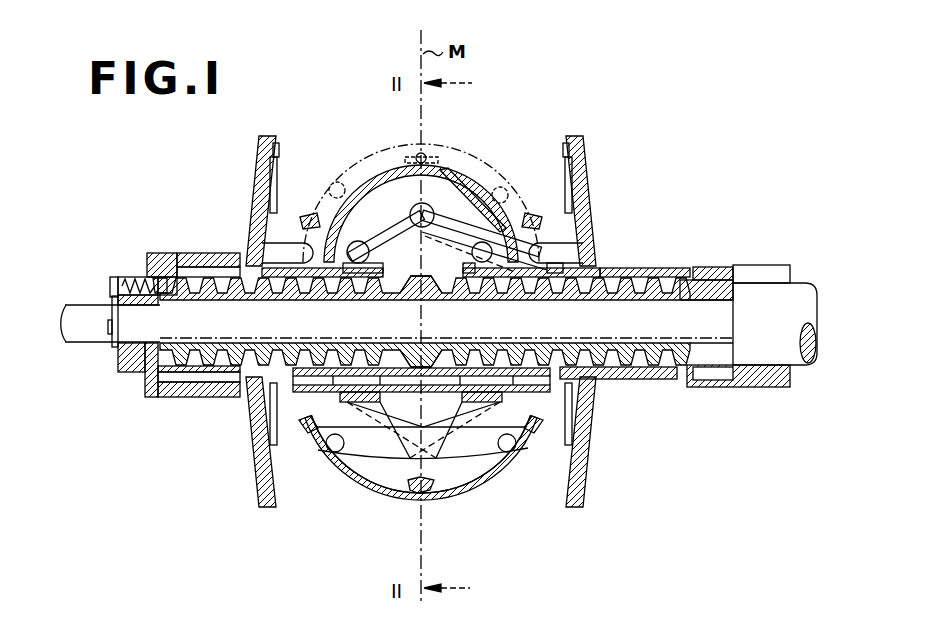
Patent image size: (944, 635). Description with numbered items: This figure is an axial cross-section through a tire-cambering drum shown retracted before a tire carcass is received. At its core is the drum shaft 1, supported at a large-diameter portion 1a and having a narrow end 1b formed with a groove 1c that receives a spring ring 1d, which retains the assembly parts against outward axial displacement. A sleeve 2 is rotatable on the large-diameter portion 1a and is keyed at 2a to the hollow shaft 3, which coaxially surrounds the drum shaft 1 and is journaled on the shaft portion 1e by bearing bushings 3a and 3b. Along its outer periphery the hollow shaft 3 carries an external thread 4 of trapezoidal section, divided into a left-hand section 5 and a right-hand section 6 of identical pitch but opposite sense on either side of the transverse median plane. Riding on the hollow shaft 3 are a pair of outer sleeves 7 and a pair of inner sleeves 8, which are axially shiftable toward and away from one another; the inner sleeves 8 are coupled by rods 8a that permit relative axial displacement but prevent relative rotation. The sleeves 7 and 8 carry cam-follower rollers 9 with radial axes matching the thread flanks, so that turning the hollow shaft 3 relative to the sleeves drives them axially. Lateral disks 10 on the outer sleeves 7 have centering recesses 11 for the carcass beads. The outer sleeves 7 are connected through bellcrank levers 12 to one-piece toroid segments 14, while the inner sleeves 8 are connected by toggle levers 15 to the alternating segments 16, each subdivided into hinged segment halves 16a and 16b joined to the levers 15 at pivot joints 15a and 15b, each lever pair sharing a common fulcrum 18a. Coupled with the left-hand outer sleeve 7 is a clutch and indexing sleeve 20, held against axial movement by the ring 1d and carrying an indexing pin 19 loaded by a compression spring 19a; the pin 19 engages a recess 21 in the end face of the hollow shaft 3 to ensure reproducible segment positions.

The drum shaft 1 is at (664, 316).
The large-diameter portion 1a is at (820, 366).
The narrow end 1b is at (76, 313).
The groove 1c is at (113, 340).
The spring ring 1d is at (115, 345).
The shaft portion 1e is at (512, 323).
The sleeve 2 is at (766, 272).
The key 2a is at (712, 382).
The hollow shaft 3 is at (712, 288).
The bearing bushing 3a is at (735, 301).
The bearing bushing 3b is at (185, 368).
The external thread 4 is at (648, 270).
The left-hand thread section 5 is at (215, 386).
The right-hand thread section 6 is at (640, 380).
The outer sleeve 7 is at (200, 256).
The inner sleeve 8 is at (350, 274).
The rod 8a is at (408, 388).
The cam-follower roller 9 is at (355, 290).
The lateral disk 10 is at (580, 182).
The centering recess 11 is at (270, 137).
The bellcrank lever 12 is at (390, 214).
The one-piece segment 14 is at (352, 188).
The toggle lever 15 is at (463, 420).
The pivot joint 15a is at (323, 447).
The pivot joint 15b is at (518, 448).
The toroidal segment 16 is at (362, 500).
The segment half 16a is at (398, 496).
The segment half 16b is at (478, 496).
The common fulcrum pivot 18a is at (420, 450).
The indexing pin 19 is at (160, 297).
The compression spring 19a is at (120, 280).
The clutch and indexing sleeve 20 is at (135, 372).
The recess 21 is at (170, 268).